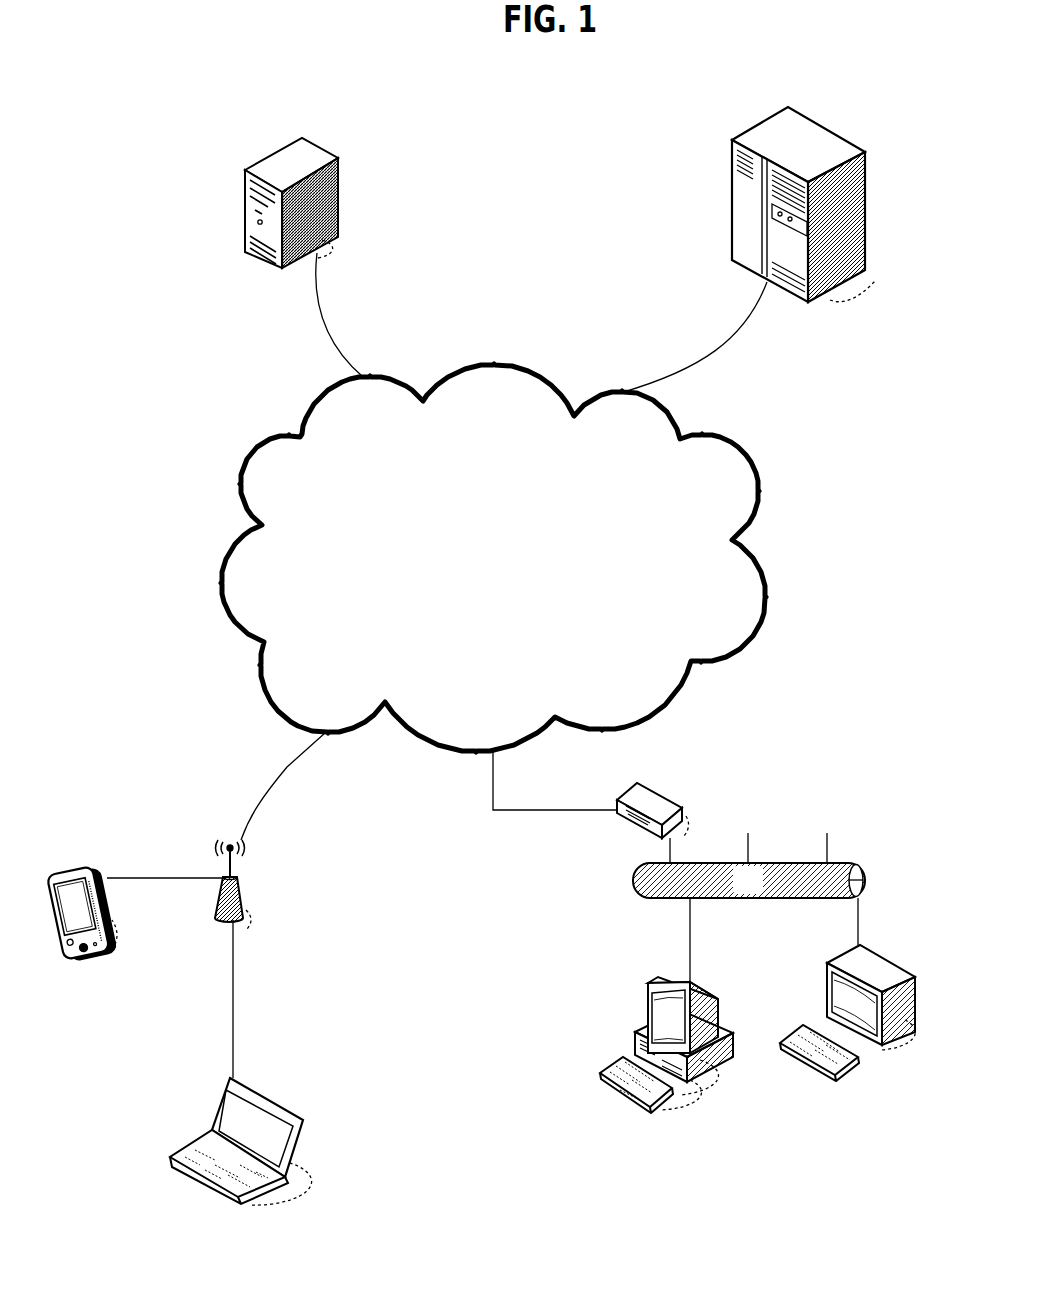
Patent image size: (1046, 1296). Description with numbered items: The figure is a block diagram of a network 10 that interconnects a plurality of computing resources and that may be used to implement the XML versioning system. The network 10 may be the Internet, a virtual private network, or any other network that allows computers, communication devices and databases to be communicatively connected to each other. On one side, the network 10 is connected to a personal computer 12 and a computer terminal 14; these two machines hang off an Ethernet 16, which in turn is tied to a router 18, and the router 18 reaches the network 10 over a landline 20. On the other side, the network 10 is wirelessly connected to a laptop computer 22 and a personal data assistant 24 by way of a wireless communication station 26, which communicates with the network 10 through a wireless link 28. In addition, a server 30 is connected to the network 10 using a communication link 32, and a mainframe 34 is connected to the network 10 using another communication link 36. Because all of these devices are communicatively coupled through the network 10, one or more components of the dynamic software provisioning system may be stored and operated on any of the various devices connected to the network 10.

The network 10 is at (493, 558).
The personal computer 12 is at (648, 982).
The computer terminal 14 is at (897, 965).
The Ethernet 16 is at (749, 907).
The router 18 is at (682, 808).
The landline 20 is at (542, 810).
The laptop computer 22 is at (287, 1178).
The personal data assistant 24 is at (85, 868).
The wireless communication station 26 is at (243, 902).
The wireless link 28 is at (283, 786).
The server 30 is at (338, 198).
The communication link 32 is at (352, 315).
The mainframe 34 is at (865, 270).
The communication link 36 is at (693, 337).